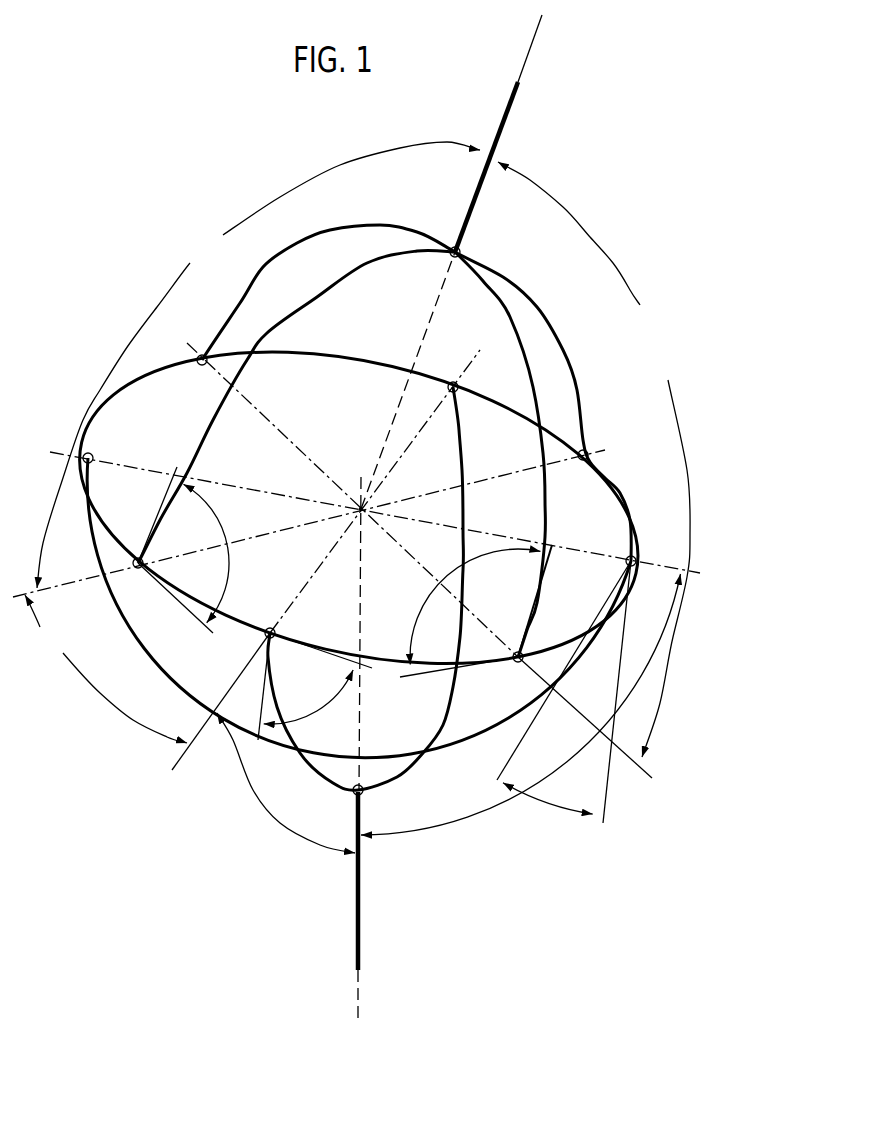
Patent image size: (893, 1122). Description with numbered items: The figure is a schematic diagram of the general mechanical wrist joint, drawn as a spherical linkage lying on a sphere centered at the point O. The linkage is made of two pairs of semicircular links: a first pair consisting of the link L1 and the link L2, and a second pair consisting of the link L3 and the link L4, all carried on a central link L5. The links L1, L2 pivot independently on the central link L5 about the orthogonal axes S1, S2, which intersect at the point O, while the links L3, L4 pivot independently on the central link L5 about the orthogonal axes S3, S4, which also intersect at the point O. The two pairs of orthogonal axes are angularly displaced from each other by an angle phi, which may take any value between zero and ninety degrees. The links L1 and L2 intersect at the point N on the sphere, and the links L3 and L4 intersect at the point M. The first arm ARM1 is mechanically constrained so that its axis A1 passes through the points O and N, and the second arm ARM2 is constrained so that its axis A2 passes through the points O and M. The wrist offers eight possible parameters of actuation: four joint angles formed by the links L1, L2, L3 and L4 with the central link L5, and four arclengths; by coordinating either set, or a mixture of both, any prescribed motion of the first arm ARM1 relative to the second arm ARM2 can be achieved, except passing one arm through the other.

The link L1 is at (443, 725).
The link L2 is at (123, 653).
The link L3 is at (510, 318).
The link L4 is at (320, 298).
The central link L5 is at (618, 482).
The axis S1 is at (292, 606).
The axis S2 is at (128, 467).
The axis S3 is at (276, 428).
The axis S4 is at (258, 537).
The axis of arm 1 A1 is at (363, 596).
The axis of arm 2 A2 is at (402, 404).
The arm 1 ARM1 is at (358, 914).
The arm 2 ARM2 is at (500, 127).
The point M is at (460, 250).
The point N is at (355, 795).
The point O is at (350, 491).